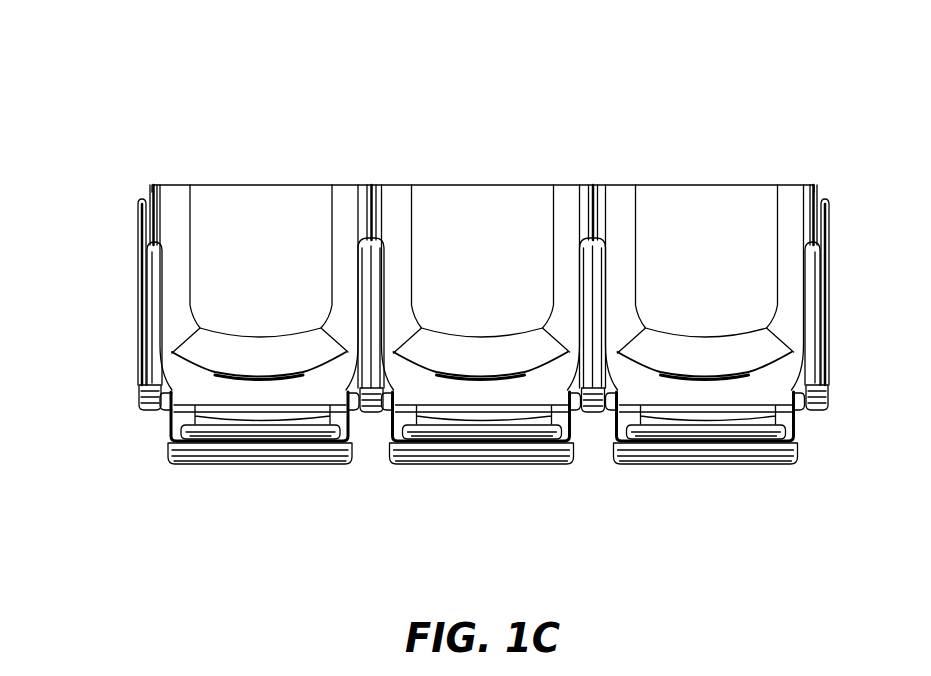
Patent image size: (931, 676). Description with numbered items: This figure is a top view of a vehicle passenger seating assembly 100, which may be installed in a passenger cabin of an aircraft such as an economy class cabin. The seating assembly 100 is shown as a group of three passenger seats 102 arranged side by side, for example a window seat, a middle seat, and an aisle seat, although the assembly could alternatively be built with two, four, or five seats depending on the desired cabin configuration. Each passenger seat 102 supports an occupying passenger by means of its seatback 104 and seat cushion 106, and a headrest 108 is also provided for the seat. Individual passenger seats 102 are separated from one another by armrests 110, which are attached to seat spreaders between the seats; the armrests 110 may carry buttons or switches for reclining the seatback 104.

The passenger seating assembly 100 is at (96, 72).
The passenger seat 102 is at (592, 153).
The seatback 104 is at (630, 386).
The seat cushion 106 is at (258, 245).
The headrest 108 is at (258, 425).
The armrest 110 is at (367, 305).